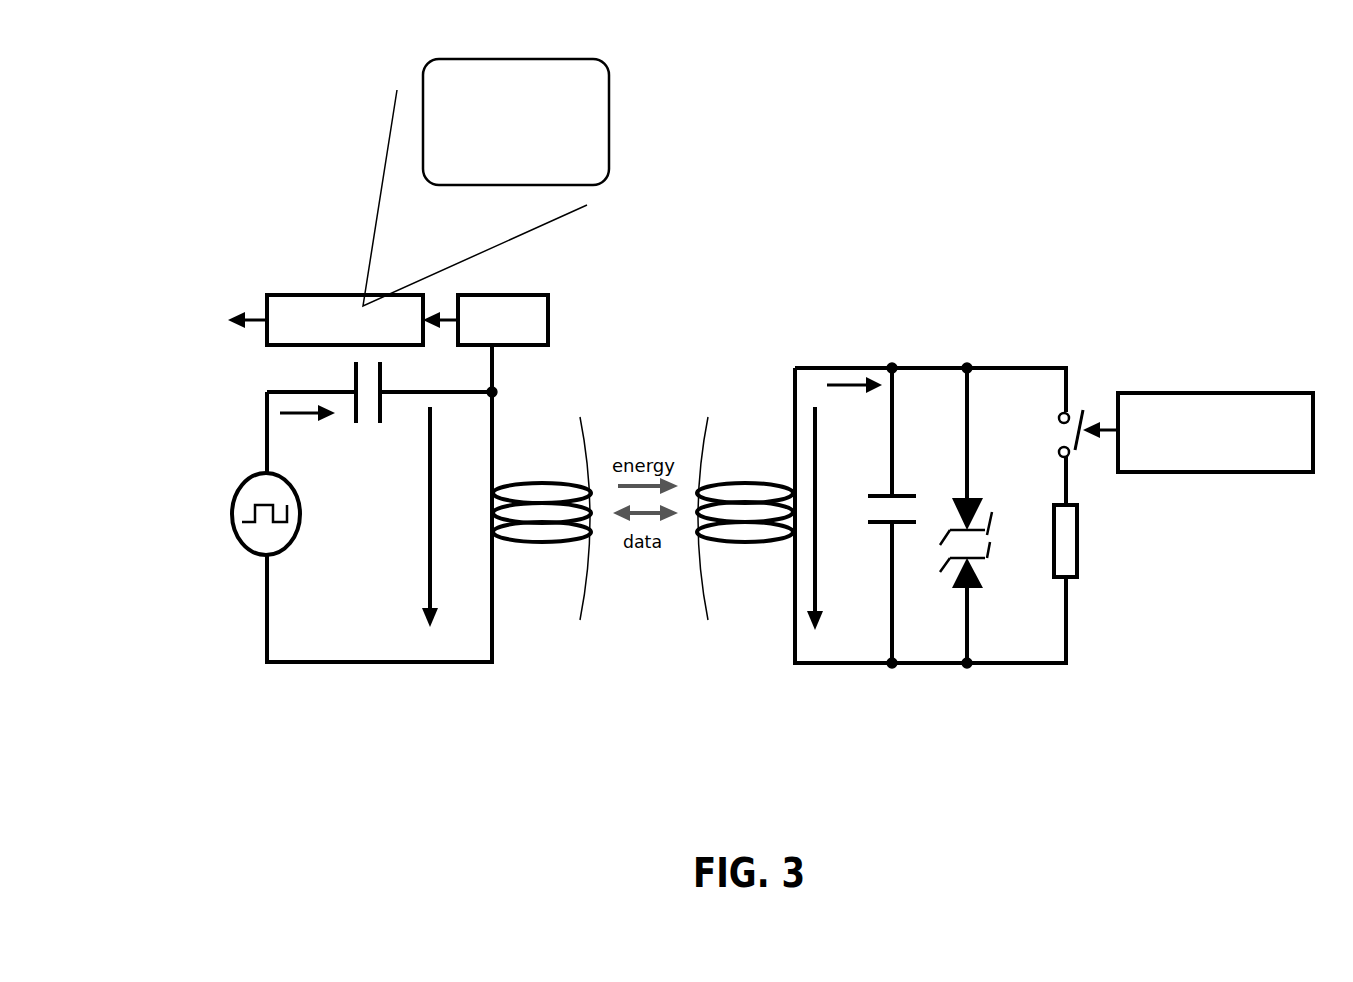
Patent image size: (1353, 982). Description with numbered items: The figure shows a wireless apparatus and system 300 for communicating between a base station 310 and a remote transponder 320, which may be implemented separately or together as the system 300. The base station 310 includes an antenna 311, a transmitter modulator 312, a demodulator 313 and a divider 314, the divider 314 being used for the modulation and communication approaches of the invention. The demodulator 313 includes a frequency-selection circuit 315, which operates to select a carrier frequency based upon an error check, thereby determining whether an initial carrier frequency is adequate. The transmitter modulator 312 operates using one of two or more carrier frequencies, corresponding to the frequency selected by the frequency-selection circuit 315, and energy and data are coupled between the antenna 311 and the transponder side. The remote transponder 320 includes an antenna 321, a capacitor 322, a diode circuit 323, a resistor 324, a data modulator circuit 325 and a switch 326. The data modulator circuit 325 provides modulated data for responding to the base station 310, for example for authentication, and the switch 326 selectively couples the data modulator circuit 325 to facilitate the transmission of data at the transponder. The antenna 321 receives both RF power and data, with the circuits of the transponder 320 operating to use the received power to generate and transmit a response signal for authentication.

The wireless apparatus and system 300 is at (1092, 73).
The base station 310 is at (540, 246).
The antenna 311 is at (514, 486).
The transmitter modulator 312 is at (285, 478).
The demodulator 313 is at (297, 348).
The divider 314 is at (517, 295).
The frequency-selection circuit 315 is at (583, 59).
The remote transponder 320 is at (1124, 242).
The antenna 321 is at (714, 487).
The capacitor 322 is at (900, 497).
The diode circuit 323 is at (958, 588).
The resistor 324 is at (1067, 580).
The data modulator circuit 325 is at (1173, 393).
The switch 326 is at (1068, 413).